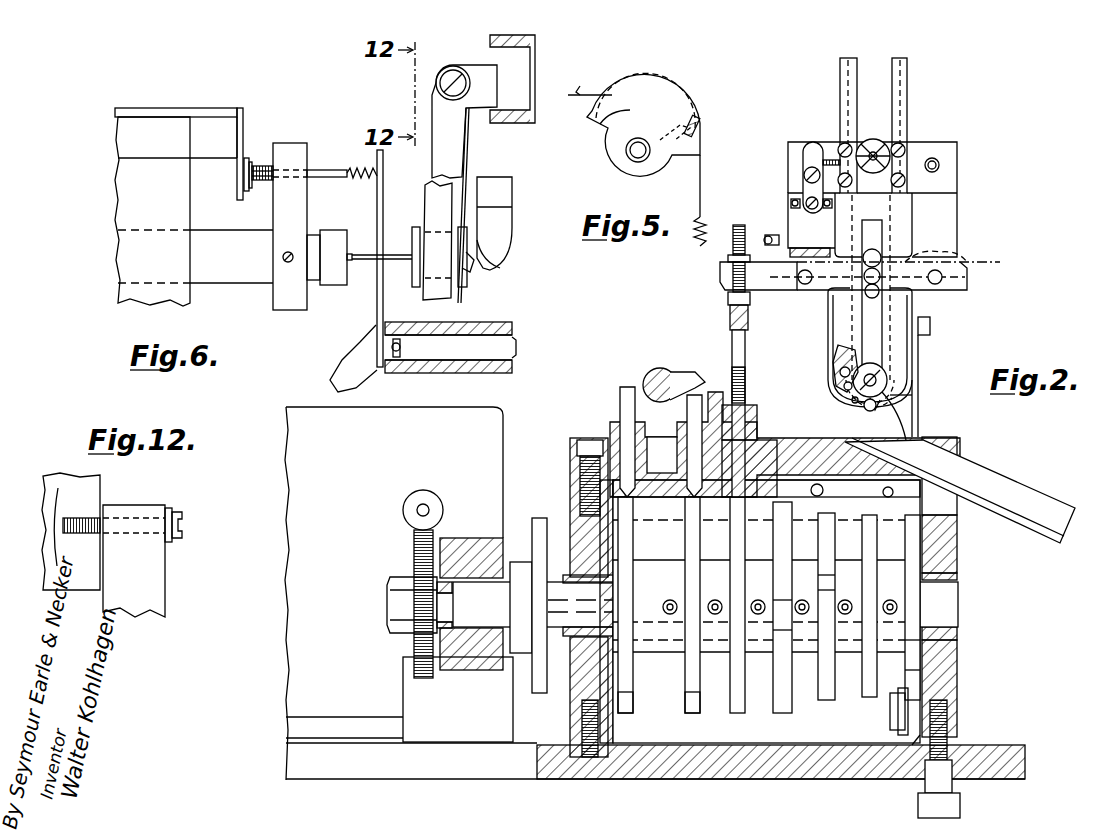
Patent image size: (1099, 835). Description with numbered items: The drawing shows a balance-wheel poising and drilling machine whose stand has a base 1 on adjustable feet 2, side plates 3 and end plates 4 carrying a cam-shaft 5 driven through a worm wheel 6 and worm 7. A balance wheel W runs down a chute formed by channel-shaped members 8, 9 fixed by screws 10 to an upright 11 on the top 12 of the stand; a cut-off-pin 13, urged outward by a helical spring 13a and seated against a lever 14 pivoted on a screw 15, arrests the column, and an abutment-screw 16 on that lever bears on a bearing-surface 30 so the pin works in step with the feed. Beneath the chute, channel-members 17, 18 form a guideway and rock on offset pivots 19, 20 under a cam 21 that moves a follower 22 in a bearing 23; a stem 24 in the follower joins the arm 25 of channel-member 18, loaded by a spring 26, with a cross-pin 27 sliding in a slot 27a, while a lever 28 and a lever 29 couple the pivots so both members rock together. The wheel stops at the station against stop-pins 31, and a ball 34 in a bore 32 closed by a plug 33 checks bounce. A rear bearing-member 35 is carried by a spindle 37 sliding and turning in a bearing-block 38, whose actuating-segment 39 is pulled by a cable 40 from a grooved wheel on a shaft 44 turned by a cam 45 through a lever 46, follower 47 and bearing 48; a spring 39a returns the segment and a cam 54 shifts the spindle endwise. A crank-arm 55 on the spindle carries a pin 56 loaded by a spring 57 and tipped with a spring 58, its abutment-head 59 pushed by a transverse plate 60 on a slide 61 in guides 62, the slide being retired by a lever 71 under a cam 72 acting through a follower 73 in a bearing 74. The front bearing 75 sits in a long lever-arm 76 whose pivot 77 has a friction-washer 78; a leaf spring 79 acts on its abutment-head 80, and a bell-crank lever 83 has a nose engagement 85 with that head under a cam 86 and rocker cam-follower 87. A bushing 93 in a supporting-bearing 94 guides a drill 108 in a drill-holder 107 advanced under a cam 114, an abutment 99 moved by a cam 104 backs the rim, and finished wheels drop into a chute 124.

In FIG. 2, the base 1 is at (416, 771).
In FIG. 2, the adjustable feet 2 is at (918, 806).
In FIG. 2, the side plates 3 is at (658, 721).
In FIG. 2, the end plates 4 is at (978, 672).
In FIG. 2, the cam-shaft 5 is at (570, 582).
In FIG. 2, the worm wheel 6 is at (412, 547).
In FIG. 2, the worm 7 is at (420, 506).
In FIG. 2, the channel-shaped member 8 is at (841, 80).
In FIG. 2, the channel-shaped member 9 is at (908, 86).
In FIG. 2, the screws 10 is at (840, 148).
In FIG. 6, the upright 11 is at (490, 40).
In FIG. 12, the upright 11 is at (45, 497).
In FIG. 2, the upright 11 is at (958, 204).
In FIG. 2, the top 12 is at (832, 440).
In FIG. 2, the cut-off-pin 13 is at (873, 140).
In FIG. 2, the helical spring 13a is at (832, 138).
In FIG. 2, the lever 14 is at (806, 160).
In FIG. 2, the screw 15 is at (806, 174).
In FIG. 2, the abutment-screw 16 is at (792, 203).
In FIG. 2, the channel-member 17 is at (920, 345).
In FIG. 2, the channel-member 18 is at (924, 320).
In FIG. 2, the offset pivot 19 is at (943, 274).
In FIG. 2, the offset pivot 20 is at (768, 235).
In FIG. 2, the cam 21 is at (737, 716).
In FIG. 2, the follower 22 is at (762, 440).
In FIG. 2, the bearing 23 is at (760, 418).
In FIG. 2, the stem 24 is at (748, 337).
In FIG. 2, the arm 25 is at (720, 274).
In FIG. 2, the spring 26 is at (733, 320).
In FIG. 2, the cross-pin 27 is at (730, 298).
In FIG. 2, the slot 27a is at (750, 300).
In FIG. 2, the lever 28 is at (950, 256).
In FIG. 2, the lever 29 is at (805, 270).
In FIG. 2, the bearing-surface 30 is at (886, 222).
In FIG. 2, the stop-pins 31 is at (851, 416).
In FIG. 2, the bore 32 is at (840, 372).
In FIG. 2, the plug 33 is at (836, 365).
In FIG. 2, the ball 34 is at (844, 386).
In FIG. 6, the rear bearing-member 35 is at (333, 232).
In FIG. 6, the spindle 37 is at (232, 284).
In FIG. 6, the bearing-block 38 is at (180, 266).
In FIG. 5, the actuating-segment 39 is at (612, 150).
In FIG. 5, the spring 39a is at (703, 224).
In FIG. 5, the cable 40 is at (631, 96).
In FIG. 2, the shaft 44 is at (660, 372).
In FIG. 2, the cam 45 is at (684, 688).
In FIG. 2, the lever 46 is at (696, 398).
In FIG. 2, the follower 47 is at (688, 508).
In FIG. 2, the bearing 48 is at (664, 440).
In FIG. 2, the cam 54 is at (782, 716).
In FIG. 6, the crank-arm 55 is at (288, 145).
In FIG. 6, the pin 56 is at (326, 170).
In FIG. 6, the spring 57 is at (260, 164).
In FIG. 6, the spring 58 is at (358, 168).
In FIG. 6, the abutment-head 59 is at (246, 190).
In FIG. 6, the transverse plate 60 is at (236, 110).
In FIG. 6, the slide 61 is at (182, 108).
In FIG. 6, the guides 62 is at (132, 140).
In FIG. 2, the lever 71 is at (628, 396).
In FIG. 2, the cam 72 is at (622, 663).
In FIG. 2, the follower 73 is at (622, 425).
In FIG. 2, the bearing 74 is at (612, 428).
In FIG. 6, the front bearing 75 is at (414, 288).
In FIG. 2, the front bearing 75 is at (890, 384).
In FIG. 6, the lever-arm 76 is at (445, 207).
In FIG. 12, the lever-arm 76 is at (166, 586).
In FIG. 2, the lever-arm 76 is at (882, 246).
In FIG. 6, the pivot 77 is at (440, 92).
In FIG. 12, the pivot 77 is at (184, 520).
In FIG. 6, the friction-washer 78 is at (436, 80).
In FIG. 12, the friction-washer 78 is at (171, 508).
In FIG. 6, the leaf spring 79 is at (470, 131).
In FIG. 6, the abutment-head 80 is at (462, 288).
In FIG. 6, the bell-crank lever 83 is at (497, 247).
In FIG. 6, the nose engagement 85 is at (472, 266).
In FIG. 2, the cam 86 is at (945, 562).
In FIG. 2, the rocker cam-follower 87 is at (915, 746).
In FIG. 6, the bushing 93 is at (458, 365).
In FIG. 2, the bushing 93 is at (879, 419).
In FIG. 2, the supporting-bearing 94 is at (915, 398).
In FIG. 6, the abutment 99 is at (352, 346).
In FIG. 2, the cam 104 is at (826, 703).
In FIG. 6, the drill-holder 107 is at (512, 362).
In FIG. 2, the drill-holder 107 is at (908, 427).
In FIG. 6, the drill 108 is at (396, 360).
In FIG. 2, the drill 108 is at (900, 410).
In FIG. 2, the cam 114 is at (870, 700).
In FIG. 2, the chute 124 is at (1050, 542).
In FIG. 2, the balance wheel W is at (880, 138).